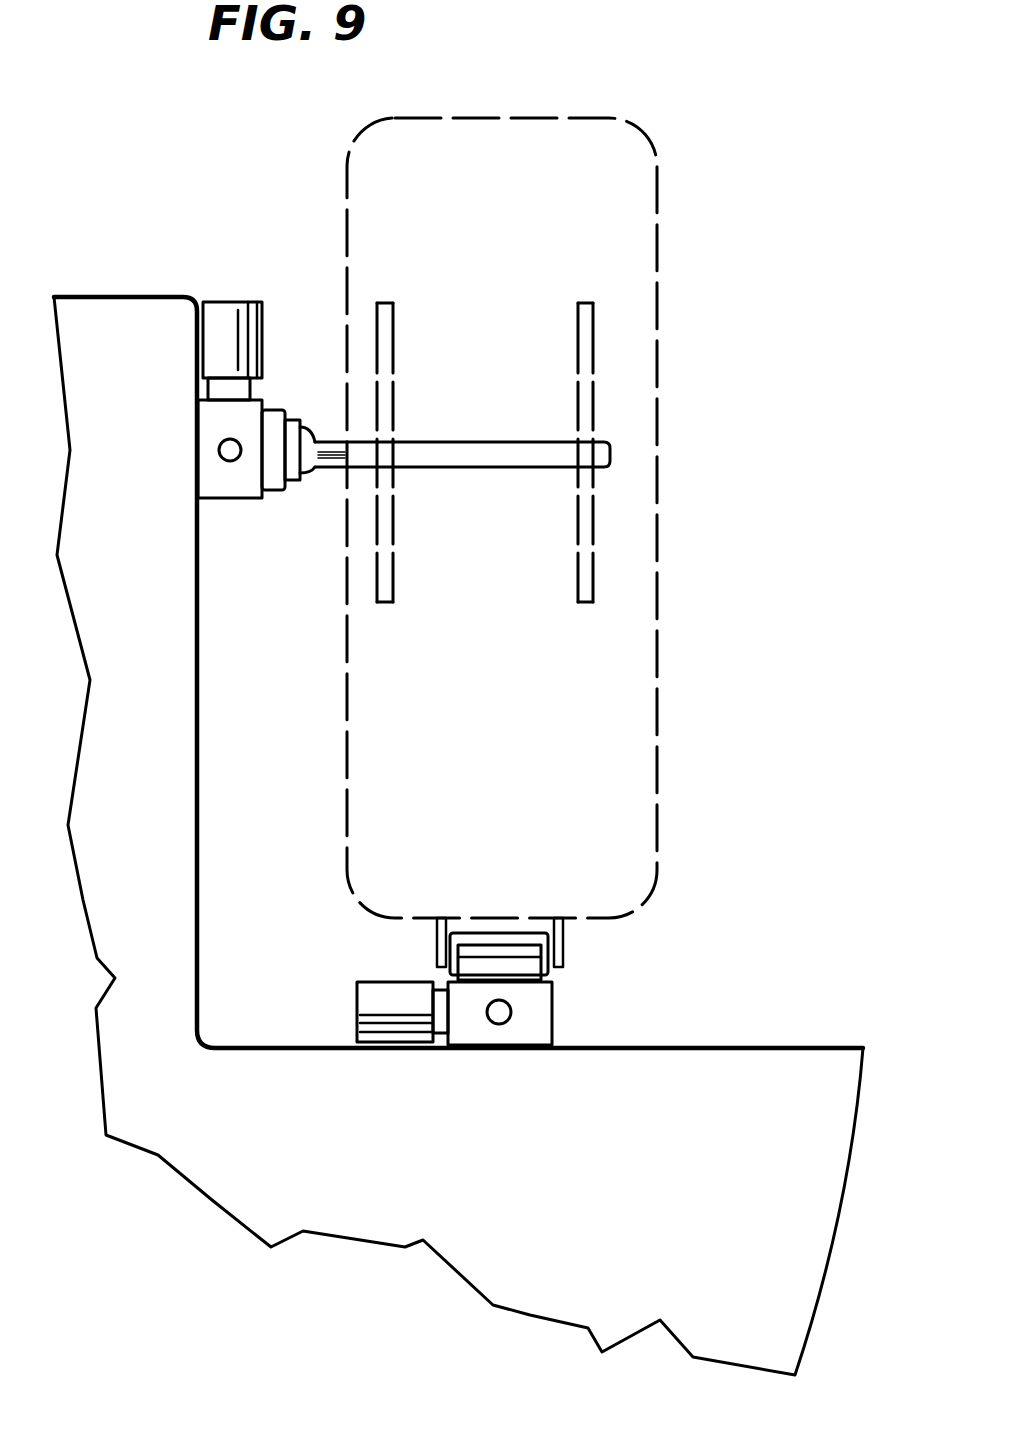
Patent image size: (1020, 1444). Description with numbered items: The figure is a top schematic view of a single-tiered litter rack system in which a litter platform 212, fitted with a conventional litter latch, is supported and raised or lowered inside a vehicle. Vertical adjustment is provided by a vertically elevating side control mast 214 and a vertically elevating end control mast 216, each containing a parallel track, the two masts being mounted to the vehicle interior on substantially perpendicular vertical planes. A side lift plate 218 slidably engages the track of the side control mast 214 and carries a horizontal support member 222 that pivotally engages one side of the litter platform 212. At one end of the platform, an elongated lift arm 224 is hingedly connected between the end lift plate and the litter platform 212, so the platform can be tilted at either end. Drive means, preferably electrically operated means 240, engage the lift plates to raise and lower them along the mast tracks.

The litter platform 212 is at (658, 742).
The side control mast 214 is at (262, 500).
The end control mast 216 is at (552, 1000).
The side lift plate 218 is at (272, 407).
The horizontal support member 222 is at (445, 445).
The lift arm 224 is at (553, 938).
The electrically operated means 240 is at (237, 300).